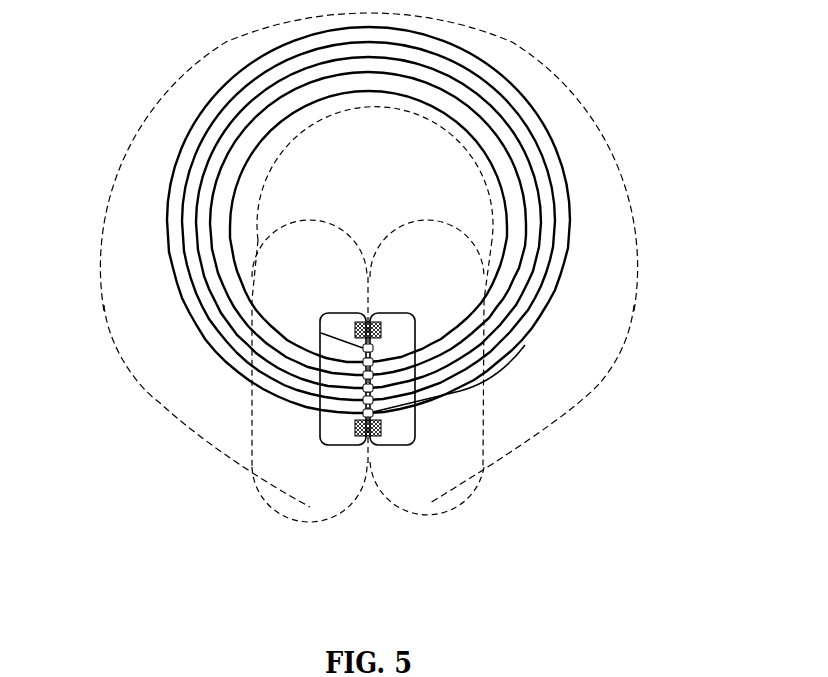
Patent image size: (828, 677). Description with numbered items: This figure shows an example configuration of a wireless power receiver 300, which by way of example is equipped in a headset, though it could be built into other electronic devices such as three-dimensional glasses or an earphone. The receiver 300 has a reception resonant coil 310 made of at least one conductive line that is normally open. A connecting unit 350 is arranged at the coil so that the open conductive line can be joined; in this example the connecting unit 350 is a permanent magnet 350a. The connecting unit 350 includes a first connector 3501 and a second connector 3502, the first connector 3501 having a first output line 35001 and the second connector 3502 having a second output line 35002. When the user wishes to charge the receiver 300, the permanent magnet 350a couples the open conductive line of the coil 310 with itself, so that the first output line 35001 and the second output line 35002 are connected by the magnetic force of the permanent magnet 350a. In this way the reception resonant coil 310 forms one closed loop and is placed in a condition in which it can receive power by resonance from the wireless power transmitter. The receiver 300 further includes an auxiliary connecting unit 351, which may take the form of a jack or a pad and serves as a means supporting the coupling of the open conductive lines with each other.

The wireless power receiver 300 is at (610, 155).
The reception resonant coil 310 is at (565, 252).
The auxiliary connecting unit 351 is at (363, 413).
The connecting unit 350 is at (356, 439).
The first connector 3501 is at (338, 447).
The second connector 3502 is at (393, 447).
The first output line 35001 is at (323, 318).
The second output line 35002 is at (415, 427).
The permanent magnet 350a is at (418, 367).